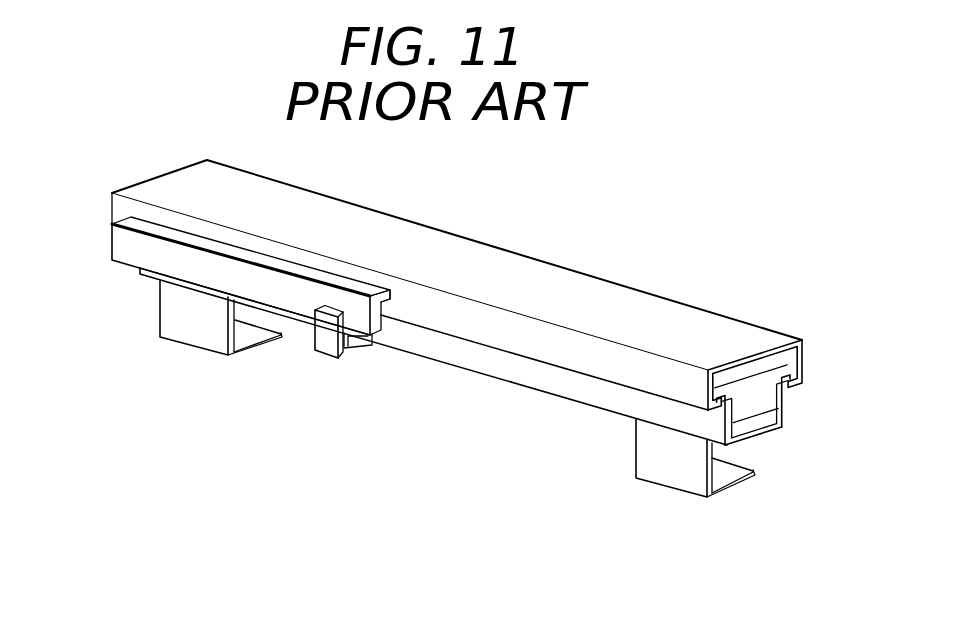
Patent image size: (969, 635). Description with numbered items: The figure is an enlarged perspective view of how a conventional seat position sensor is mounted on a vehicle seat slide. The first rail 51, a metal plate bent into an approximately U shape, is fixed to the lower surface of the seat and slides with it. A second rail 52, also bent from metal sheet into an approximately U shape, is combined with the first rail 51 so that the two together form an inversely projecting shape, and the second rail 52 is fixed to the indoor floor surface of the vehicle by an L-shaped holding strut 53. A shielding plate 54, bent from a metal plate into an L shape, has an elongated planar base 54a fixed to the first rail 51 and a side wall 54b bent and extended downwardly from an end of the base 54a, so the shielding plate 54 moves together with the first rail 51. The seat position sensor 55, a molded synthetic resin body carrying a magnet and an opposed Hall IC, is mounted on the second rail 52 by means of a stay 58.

The first rail 51 is at (741, 314).
The second rail 52 is at (788, 415).
The holding strut 53 is at (211, 354).
The shielding plate 54 is at (119, 267).
The base 54a is at (383, 305).
The side wall 54b is at (292, 317).
The seat position sensor 55 is at (349, 363).
The stay 58 is at (366, 346).